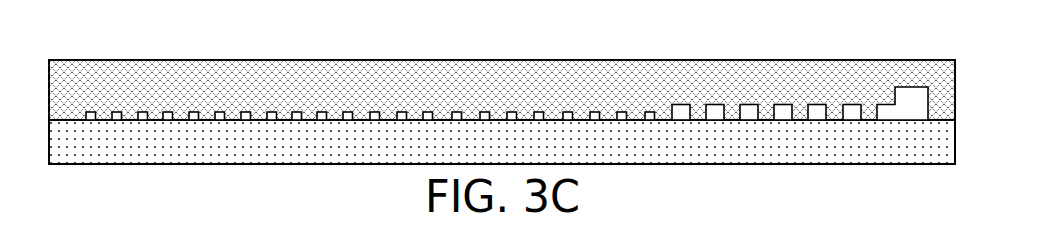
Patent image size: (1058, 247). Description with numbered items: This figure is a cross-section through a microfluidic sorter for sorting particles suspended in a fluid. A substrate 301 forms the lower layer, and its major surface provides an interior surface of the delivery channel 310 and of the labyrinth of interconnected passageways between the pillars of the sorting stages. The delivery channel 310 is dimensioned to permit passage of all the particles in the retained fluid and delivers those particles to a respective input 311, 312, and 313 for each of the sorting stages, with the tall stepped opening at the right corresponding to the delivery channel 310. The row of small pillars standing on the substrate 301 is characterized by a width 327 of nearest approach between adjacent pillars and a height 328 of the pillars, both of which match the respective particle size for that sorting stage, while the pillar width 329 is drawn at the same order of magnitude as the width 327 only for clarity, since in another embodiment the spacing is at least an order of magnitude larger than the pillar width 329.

The substrate 301 is at (520, 150).
The delivery channel 310 is at (922, 121).
The input 311 is at (231, 109).
The input 312 is at (527, 110).
The input 313 is at (772, 109).
The width of nearest approach 327 is at (375, 102).
The height of the pillars 328 is at (415, 132).
The pillar width 329 is at (471, 102).